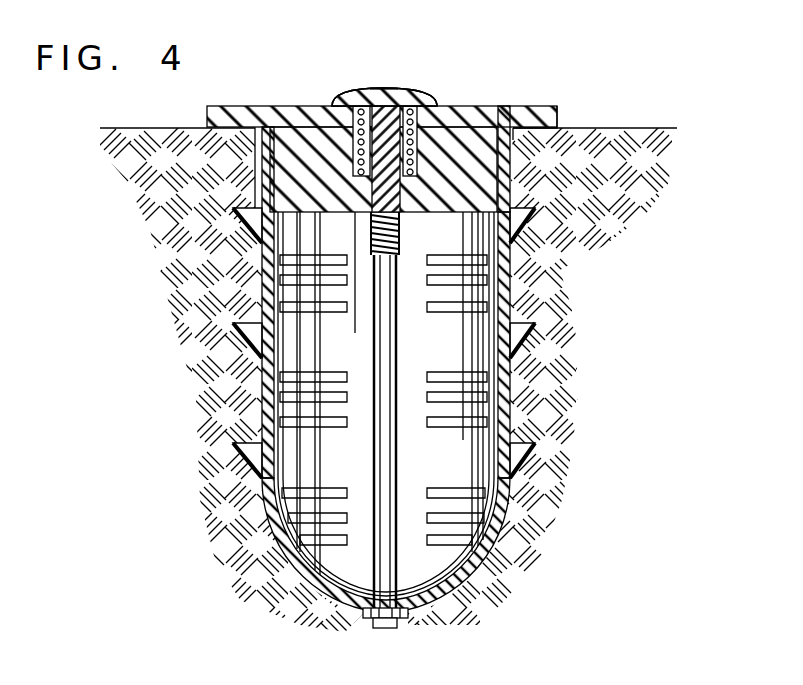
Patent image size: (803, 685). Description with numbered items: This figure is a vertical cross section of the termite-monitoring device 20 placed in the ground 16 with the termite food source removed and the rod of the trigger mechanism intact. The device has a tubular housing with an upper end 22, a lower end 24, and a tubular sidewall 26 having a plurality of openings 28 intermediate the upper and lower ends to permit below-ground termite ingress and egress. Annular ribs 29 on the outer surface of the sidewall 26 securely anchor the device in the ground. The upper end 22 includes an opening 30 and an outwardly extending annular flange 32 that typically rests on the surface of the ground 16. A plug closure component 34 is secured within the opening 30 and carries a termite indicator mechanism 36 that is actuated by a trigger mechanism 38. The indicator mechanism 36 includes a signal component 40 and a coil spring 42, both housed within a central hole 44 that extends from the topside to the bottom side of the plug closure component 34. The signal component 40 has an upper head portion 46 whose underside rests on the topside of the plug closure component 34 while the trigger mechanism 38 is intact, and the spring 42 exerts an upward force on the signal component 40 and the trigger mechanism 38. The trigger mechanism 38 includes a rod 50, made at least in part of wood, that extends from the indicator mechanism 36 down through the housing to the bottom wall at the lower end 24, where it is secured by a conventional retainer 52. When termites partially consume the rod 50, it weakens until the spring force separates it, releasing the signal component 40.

The ground 16 is at (615, 180).
The termite-monitoring device 20 is at (430, 315).
The upper end 22 is at (205, 111).
The lower end 24 is at (462, 592).
The tubular sidewall 26 is at (255, 382).
The openings 28 is at (480, 258).
The annular ribs 29 is at (262, 231).
The opening 30 is at (262, 158).
The annular flange 32 is at (540, 118).
The plug closure component 34 is at (490, 103).
The termite indicator mechanism 36 is at (430, 83).
The trigger mechanism 38 is at (408, 352).
The signal component 40 is at (343, 86).
The coil spring 42 is at (415, 150).
The central hole 44 is at (355, 152).
The head portion 46 is at (388, 88).
The rod 50 is at (380, 430).
The retainer 52 is at (363, 614).